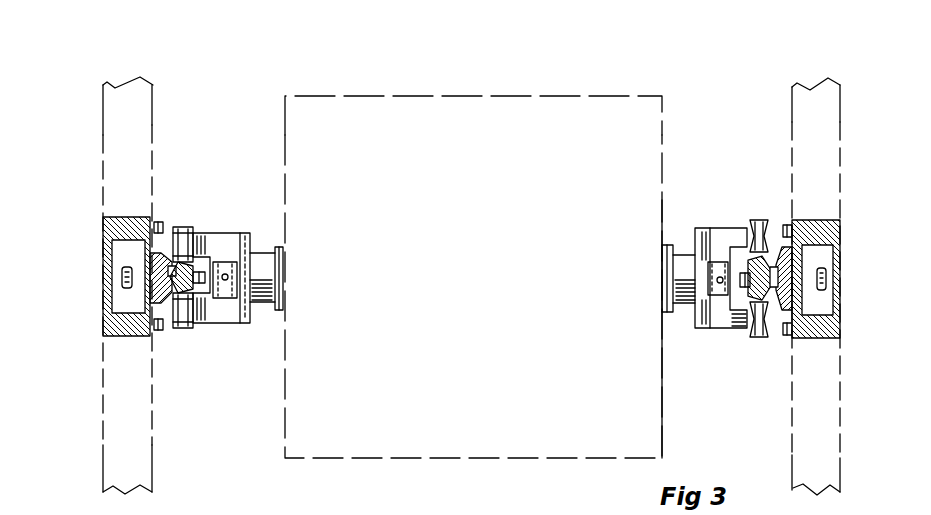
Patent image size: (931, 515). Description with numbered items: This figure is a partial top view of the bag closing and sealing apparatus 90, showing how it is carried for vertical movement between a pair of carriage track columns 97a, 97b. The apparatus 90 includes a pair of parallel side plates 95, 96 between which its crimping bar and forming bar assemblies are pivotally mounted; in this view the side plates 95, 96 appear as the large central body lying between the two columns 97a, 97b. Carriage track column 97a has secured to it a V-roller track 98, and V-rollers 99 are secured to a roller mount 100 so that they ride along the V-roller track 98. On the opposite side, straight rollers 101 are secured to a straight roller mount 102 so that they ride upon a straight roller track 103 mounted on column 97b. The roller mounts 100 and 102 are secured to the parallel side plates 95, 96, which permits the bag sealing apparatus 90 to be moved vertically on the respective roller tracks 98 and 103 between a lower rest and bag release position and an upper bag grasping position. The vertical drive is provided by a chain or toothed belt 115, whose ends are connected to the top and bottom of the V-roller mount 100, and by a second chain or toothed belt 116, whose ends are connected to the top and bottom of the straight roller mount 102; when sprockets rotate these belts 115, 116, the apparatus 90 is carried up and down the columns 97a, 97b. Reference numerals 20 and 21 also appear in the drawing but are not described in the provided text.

The conveyor apparatus 20 is at (200, 100).
The frame side rail 21 is at (103, 97).
The bag closing apparatus 90 is at (276, 104).
The side plate 95 is at (285, 433).
The side plate 96 is at (662, 436).
The carriage track column 97a is at (840, 245).
The carriage track column 97b is at (103, 240).
The V-roller track 98 is at (771, 265).
The V-rollers 99 is at (757, 222).
The roller mount 100 is at (727, 330).
The straight rollers 101 is at (182, 227).
The straight roller mount 102 is at (213, 237).
The straight roller track 103 is at (202, 292).
The toothed belt 115 is at (123, 277).
The toothed belt 116 is at (826, 280).